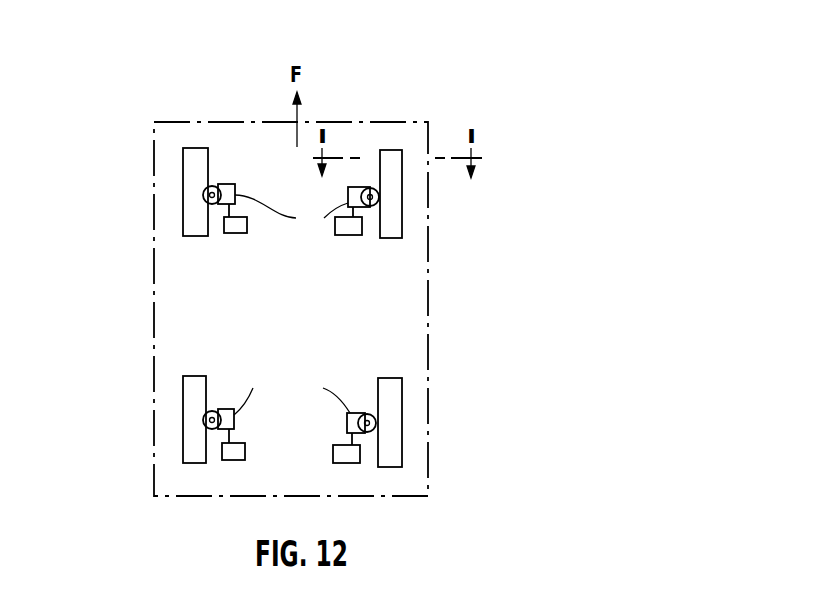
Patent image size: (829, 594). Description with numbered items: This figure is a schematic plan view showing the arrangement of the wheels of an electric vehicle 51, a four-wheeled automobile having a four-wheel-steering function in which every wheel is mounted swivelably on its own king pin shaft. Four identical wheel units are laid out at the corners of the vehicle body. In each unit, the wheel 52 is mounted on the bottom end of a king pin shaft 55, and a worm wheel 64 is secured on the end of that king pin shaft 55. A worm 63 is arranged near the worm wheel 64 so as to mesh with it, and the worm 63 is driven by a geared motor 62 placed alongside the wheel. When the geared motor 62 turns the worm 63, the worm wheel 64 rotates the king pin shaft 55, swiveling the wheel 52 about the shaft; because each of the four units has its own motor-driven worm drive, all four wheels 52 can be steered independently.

The electric vehicle 51 is at (138, 295).
The wheel 52 is at (185, 178).
The king pin shaft 55 is at (231, 184).
The geared motor 62 is at (234, 234).
The worm 63 is at (292, 305).
The worm wheel 64 is at (214, 188).